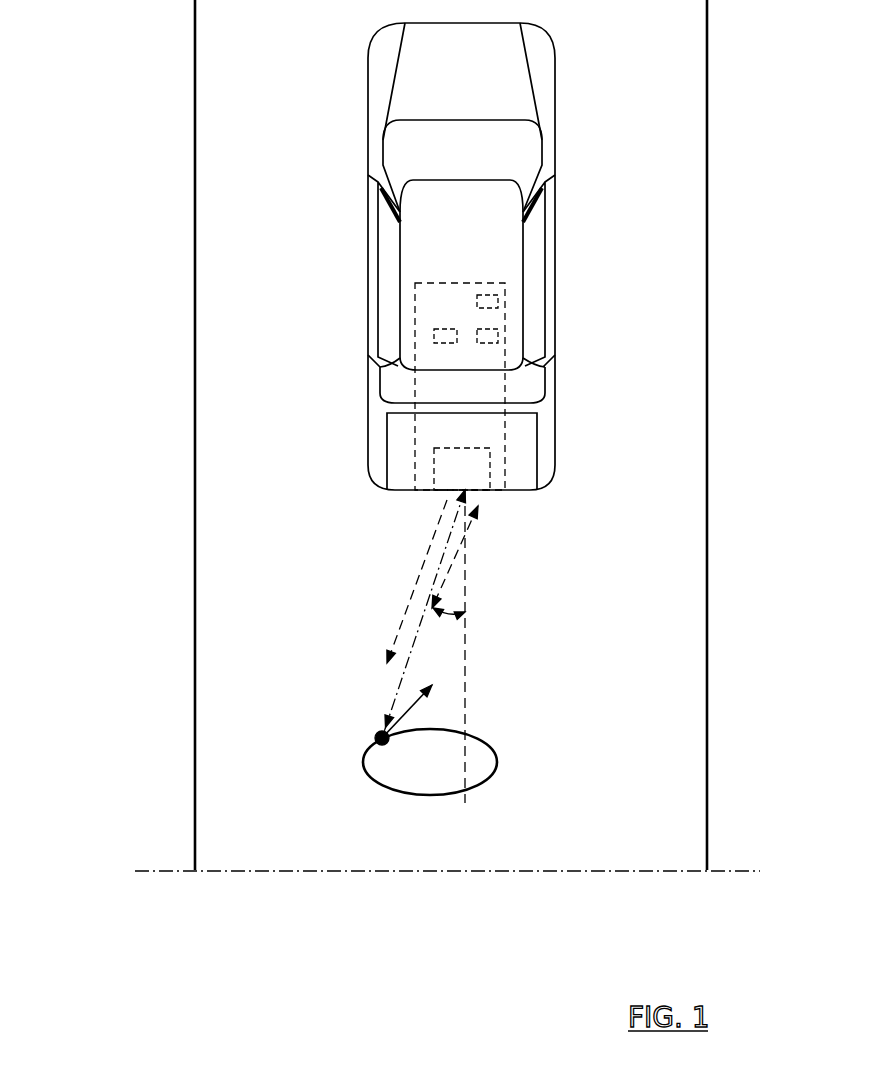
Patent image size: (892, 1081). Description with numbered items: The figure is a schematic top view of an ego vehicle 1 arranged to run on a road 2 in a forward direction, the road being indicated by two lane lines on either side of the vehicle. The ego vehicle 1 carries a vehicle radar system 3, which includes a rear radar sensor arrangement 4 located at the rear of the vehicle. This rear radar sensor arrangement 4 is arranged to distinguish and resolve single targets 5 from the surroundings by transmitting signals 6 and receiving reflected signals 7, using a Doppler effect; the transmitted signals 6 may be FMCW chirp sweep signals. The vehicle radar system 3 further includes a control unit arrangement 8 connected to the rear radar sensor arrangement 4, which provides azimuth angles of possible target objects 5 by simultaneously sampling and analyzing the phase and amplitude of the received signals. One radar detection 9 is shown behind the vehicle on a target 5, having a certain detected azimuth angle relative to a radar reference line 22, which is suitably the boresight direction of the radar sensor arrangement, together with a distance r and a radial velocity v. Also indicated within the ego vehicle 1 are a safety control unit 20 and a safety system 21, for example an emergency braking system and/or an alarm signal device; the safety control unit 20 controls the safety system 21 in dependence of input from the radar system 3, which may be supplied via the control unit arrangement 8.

The ego vehicle 1 is at (440, 218).
The road 2 is at (250, 758).
The vehicle radar system 3 is at (430, 380).
The rear radar sensor arrangement 4 is at (482, 487).
The target 5 is at (488, 773).
The transmitted signals 6 is at (423, 557).
The reflected signals 7 is at (460, 563).
The control unit arrangement 8 is at (493, 335).
The radar detection 9 is at (380, 738).
The safety control unit 20 is at (434, 338).
The safety system 21 is at (493, 298).
The radar reference line 22 is at (467, 588).
The distance r is at (395, 686).
The radial velocity v is at (393, 733).